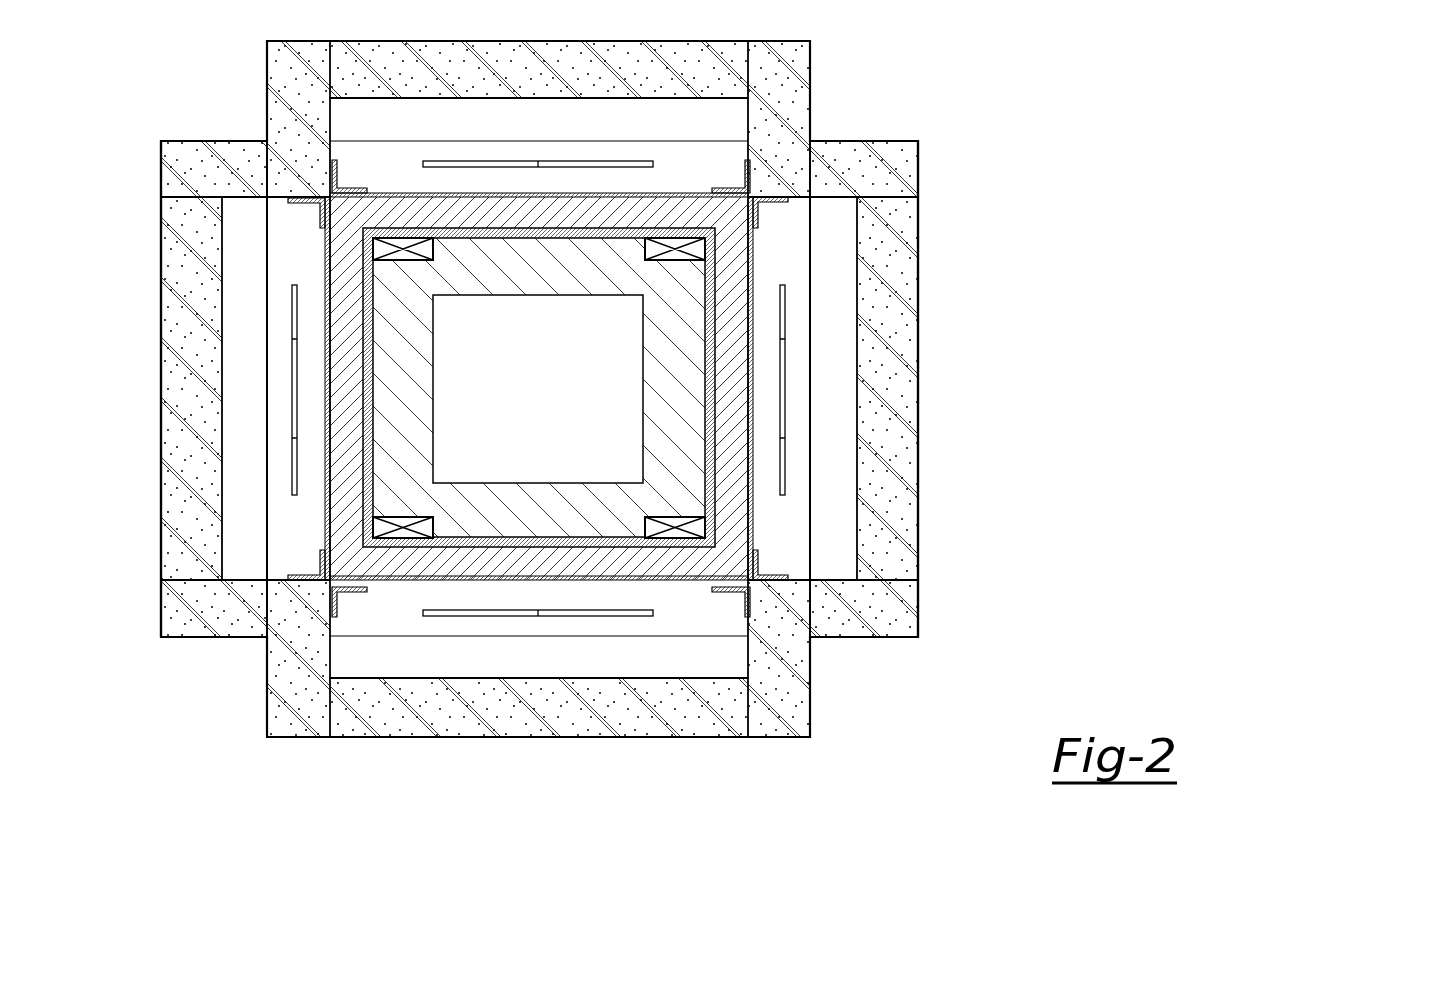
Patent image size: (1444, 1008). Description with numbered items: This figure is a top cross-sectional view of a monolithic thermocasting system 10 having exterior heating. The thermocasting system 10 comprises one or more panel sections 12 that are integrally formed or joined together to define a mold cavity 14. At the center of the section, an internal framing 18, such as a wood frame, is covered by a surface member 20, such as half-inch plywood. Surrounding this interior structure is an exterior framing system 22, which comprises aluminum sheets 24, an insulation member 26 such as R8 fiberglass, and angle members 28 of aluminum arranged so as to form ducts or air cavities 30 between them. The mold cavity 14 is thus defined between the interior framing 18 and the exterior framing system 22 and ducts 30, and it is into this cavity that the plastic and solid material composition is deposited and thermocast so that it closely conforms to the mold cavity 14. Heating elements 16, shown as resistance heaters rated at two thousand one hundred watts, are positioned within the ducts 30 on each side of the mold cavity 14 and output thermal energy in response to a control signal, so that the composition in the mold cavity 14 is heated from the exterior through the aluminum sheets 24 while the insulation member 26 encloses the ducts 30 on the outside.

The thermocasting system 10 is at (988, 632).
The panel section 12 is at (161, 558).
The mold cavity 14 is at (732, 245).
The heating element 16 is at (785, 388).
The internal framing 18 is at (693, 529).
The surface member 20 is at (707, 498).
The exterior framing system 22 is at (918, 558).
The aluminum sheet 24 is at (918, 357).
The insulation member 26 is at (890, 328).
The angle member 28 is at (758, 215).
The duct 30 is at (832, 299).